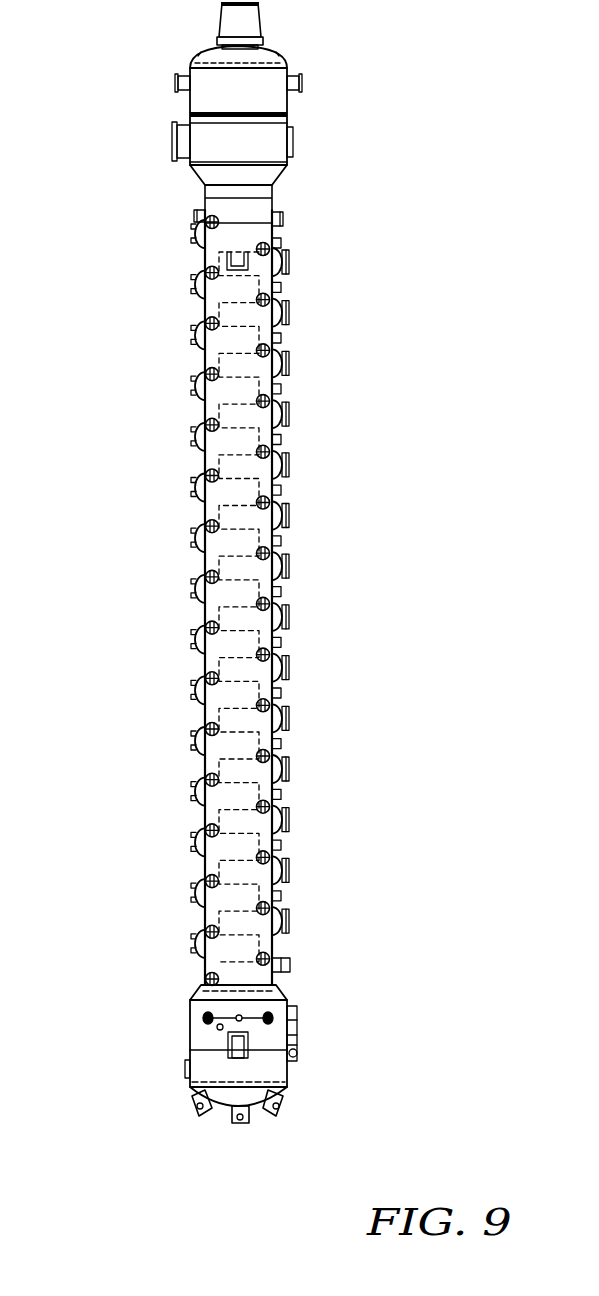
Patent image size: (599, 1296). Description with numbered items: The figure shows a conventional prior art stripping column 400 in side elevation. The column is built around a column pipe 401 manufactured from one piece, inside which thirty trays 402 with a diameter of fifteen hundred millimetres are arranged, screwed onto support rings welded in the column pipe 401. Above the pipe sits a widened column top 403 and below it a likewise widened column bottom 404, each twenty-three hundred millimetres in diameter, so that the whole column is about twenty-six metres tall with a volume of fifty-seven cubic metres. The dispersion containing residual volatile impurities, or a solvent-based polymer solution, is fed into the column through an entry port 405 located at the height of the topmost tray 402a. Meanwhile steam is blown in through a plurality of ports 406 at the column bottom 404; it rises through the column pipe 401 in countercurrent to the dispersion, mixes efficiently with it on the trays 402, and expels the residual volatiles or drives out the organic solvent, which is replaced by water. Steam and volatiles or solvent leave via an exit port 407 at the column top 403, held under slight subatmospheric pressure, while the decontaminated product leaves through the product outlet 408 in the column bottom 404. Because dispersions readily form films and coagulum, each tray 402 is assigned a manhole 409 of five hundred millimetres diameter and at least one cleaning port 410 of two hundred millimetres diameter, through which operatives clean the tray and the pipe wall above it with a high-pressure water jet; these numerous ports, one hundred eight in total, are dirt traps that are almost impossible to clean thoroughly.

The stripping column 400 is at (364, 70).
The column pipe 401 is at (325, 461).
The trays 402 is at (281, 689).
The topmost tray 402a is at (284, 230).
The column top 403 is at (143, 136).
The column bottom 404 is at (150, 1036).
The entry port 405 is at (197, 216).
The ports 406 is at (197, 1117).
The exit port 407 is at (236, 21).
The product outlet 408 is at (240, 1123).
The manhole 409 is at (285, 567).
The cleaning port 410 is at (205, 627).